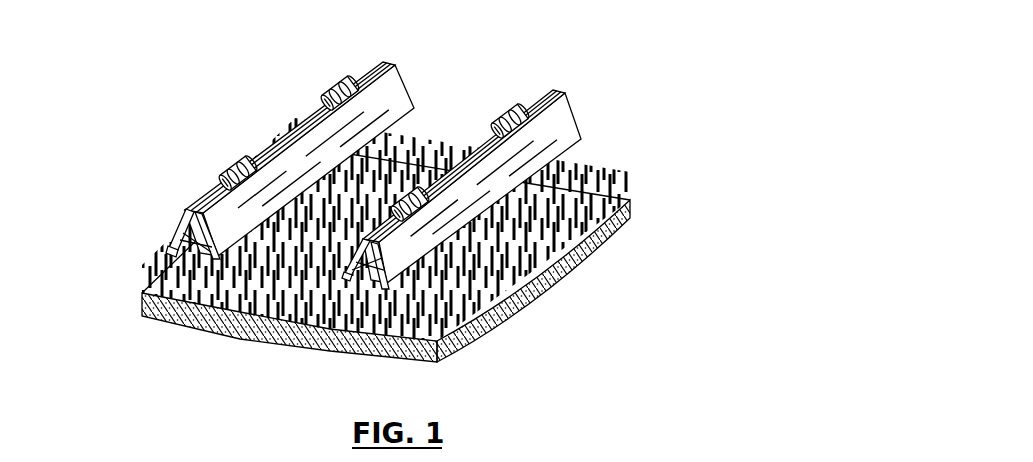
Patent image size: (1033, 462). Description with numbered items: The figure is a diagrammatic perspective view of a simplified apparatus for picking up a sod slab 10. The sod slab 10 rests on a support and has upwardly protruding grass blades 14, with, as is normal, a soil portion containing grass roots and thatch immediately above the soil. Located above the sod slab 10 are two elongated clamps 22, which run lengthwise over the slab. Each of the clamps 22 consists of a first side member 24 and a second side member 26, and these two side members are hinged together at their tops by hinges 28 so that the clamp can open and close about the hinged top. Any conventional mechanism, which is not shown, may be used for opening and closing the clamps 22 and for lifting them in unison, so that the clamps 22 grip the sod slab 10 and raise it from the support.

The sod slab 10 is at (411, 184).
The grass blades 14 is at (614, 222).
The elongated clamps 22 is at (393, 148).
The first side member 24 is at (154, 203).
The second side member 26 is at (176, 244).
The hinges 28 is at (238, 158).